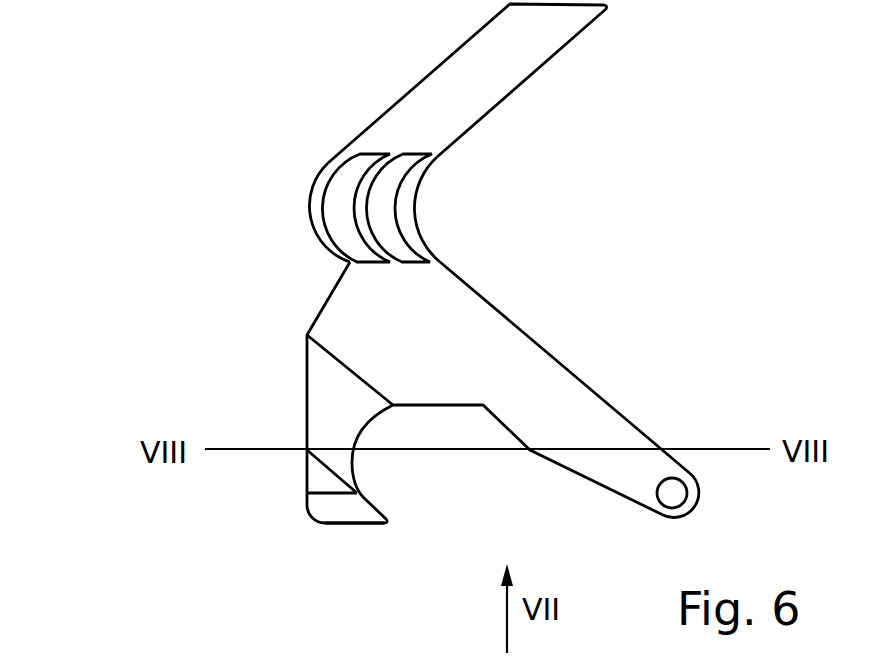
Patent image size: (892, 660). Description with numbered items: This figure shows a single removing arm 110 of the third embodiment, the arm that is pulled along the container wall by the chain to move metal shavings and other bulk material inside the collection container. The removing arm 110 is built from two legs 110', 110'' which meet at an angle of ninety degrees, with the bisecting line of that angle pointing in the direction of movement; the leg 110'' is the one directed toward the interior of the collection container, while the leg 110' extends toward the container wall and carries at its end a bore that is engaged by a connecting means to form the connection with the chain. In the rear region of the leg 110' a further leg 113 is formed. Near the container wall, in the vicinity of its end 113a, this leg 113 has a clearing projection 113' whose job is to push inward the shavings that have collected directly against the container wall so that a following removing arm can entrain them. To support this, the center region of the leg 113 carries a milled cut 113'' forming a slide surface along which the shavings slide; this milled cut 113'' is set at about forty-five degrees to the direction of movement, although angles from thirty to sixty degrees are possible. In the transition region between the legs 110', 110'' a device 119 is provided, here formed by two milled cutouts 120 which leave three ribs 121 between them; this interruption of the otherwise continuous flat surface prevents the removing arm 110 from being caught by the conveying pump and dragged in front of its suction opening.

The removing arm 110 is at (398, 309).
The leg 110' is at (563, 389).
The leg 110'' is at (530, 83).
The further leg 113 is at (333, 438).
The clearing projection 113' is at (283, 513).
The milled cut 113'' is at (280, 370).
The end 113a is at (349, 527).
The device 119 is at (596, 190).
The milled cutouts 120 is at (333, 200).
The ribs 121 is at (327, 170).